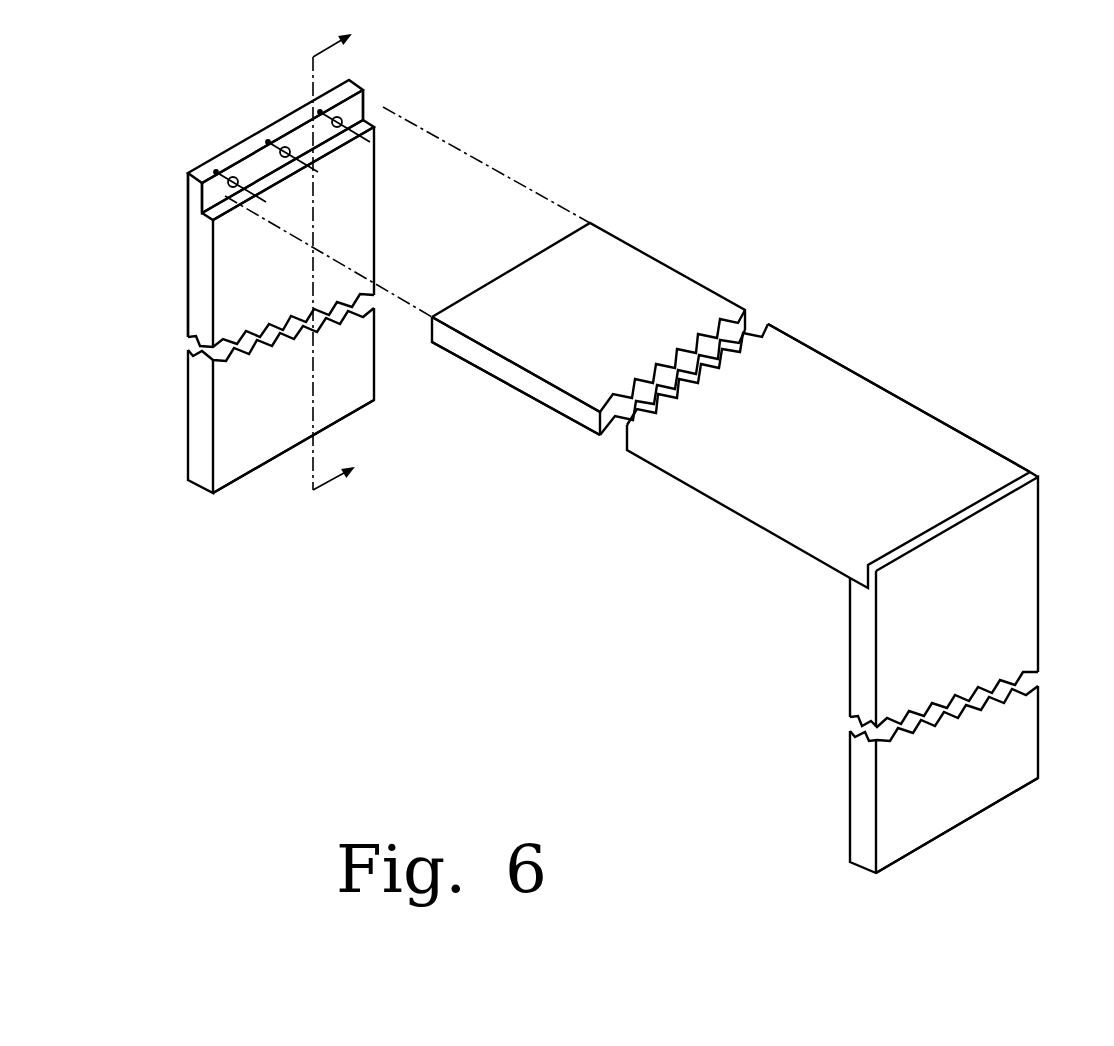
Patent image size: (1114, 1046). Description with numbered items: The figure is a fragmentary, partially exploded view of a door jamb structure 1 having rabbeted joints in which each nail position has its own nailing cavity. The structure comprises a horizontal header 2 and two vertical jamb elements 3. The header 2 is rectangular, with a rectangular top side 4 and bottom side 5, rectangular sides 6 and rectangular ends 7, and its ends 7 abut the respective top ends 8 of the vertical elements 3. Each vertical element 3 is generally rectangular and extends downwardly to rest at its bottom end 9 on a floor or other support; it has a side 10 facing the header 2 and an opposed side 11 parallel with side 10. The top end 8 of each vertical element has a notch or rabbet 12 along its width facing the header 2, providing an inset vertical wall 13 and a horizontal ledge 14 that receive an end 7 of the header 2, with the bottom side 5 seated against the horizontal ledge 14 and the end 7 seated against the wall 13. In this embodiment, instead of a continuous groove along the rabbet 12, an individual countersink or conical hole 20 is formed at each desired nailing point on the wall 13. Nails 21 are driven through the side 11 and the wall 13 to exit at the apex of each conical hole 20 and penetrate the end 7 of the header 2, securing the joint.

The door jamb structure 1 is at (1013, 615).
The header 2 is at (828, 456).
The vertical jamb elements 3 is at (613, 476).
The top side 4 is at (628, 283).
The bottom side 5 is at (508, 385).
The sides 6 is at (563, 407).
The ends 7 is at (1030, 472).
The top ends 8 is at (261, 142).
The bottom ends 9 is at (258, 468).
The side 10 is at (345, 198).
The opposed side 11 is at (190, 266).
The rabbet 12 is at (363, 92).
The inset vertical wall 13 is at (365, 92).
The horizontal ledge 14 is at (364, 122).
The conical hole 20 is at (287, 150).
The nails 21 is at (366, 128).